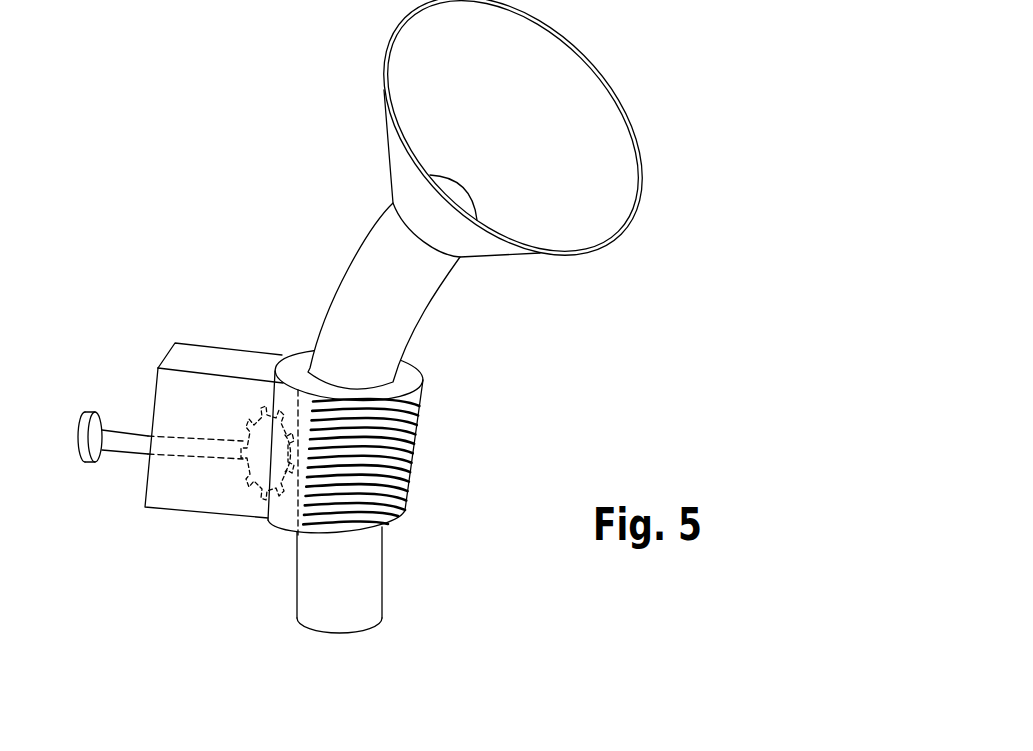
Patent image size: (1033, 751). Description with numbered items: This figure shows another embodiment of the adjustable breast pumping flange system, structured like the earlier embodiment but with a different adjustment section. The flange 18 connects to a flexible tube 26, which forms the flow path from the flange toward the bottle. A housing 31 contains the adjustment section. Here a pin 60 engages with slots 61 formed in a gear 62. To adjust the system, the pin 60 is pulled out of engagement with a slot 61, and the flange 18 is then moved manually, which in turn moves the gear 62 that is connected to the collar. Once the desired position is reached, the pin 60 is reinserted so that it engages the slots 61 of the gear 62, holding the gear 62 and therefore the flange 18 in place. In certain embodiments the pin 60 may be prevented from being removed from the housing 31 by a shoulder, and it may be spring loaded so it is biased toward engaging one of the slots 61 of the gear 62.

The flange 18 is at (647, 181).
The flexible tube 26 is at (427, 305).
The housing 31 is at (139, 491).
The pin 60 is at (80, 428).
The slots 61 is at (259, 478).
The gear 62 is at (294, 415).